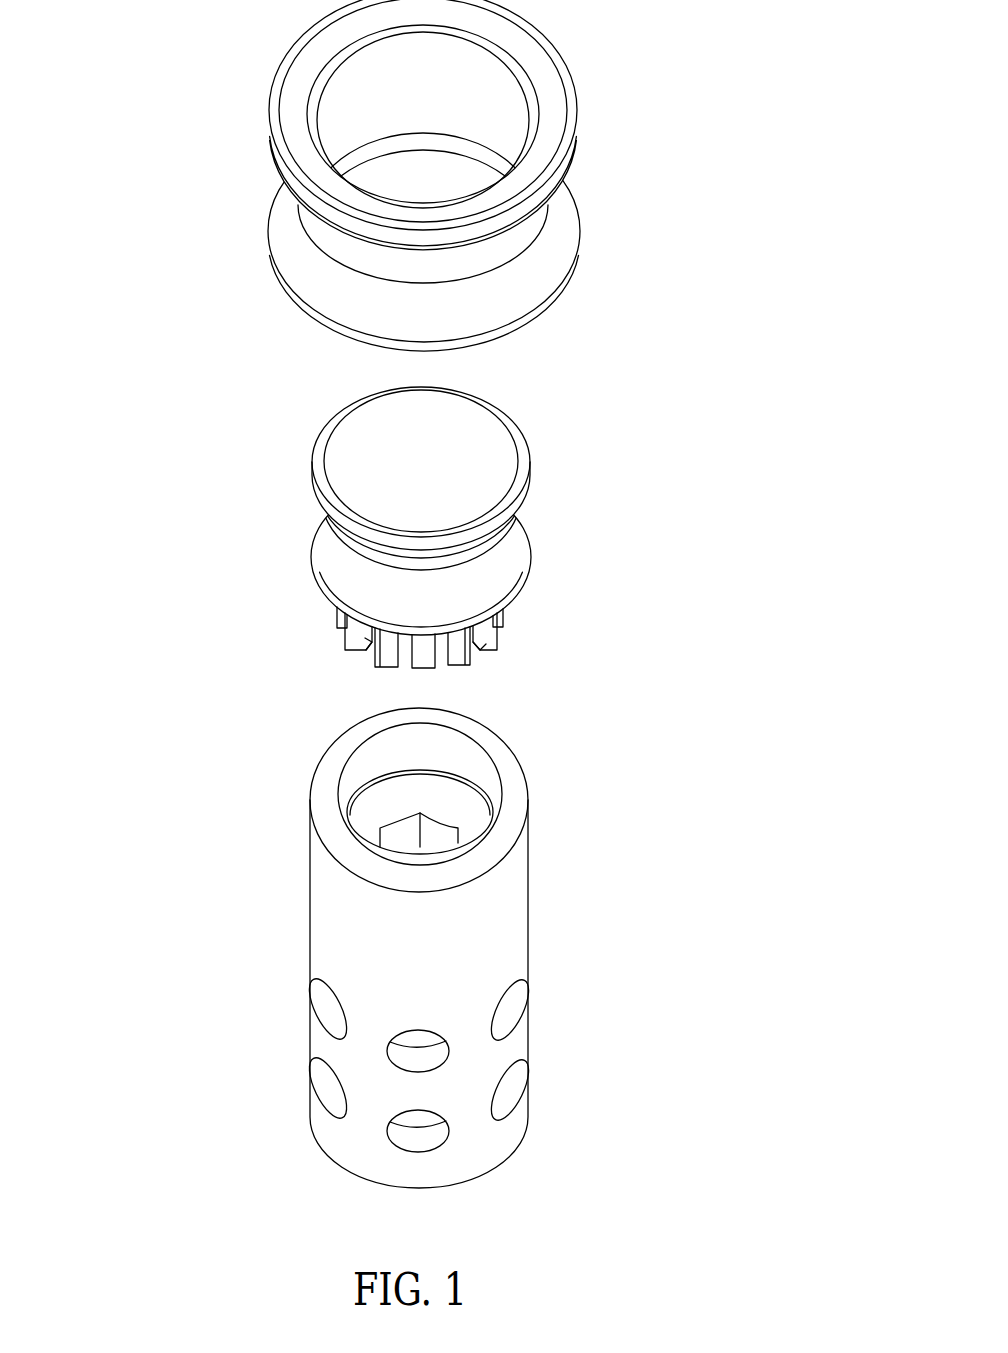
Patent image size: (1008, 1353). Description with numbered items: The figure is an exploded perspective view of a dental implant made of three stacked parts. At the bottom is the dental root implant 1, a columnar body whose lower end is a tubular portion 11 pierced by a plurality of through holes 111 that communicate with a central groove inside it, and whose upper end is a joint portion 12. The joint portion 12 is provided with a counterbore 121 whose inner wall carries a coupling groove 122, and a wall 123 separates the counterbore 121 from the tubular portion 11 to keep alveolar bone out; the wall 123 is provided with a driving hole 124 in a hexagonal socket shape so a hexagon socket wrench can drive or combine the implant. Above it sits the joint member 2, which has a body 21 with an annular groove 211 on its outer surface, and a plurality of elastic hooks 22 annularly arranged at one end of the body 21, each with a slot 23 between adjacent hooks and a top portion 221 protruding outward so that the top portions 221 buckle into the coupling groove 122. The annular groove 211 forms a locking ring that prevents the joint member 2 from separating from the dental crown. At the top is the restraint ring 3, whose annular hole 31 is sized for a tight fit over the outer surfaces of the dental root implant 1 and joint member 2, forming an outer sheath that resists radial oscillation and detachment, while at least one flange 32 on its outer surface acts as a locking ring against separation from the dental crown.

The dental root implant 1 is at (663, 763).
The tubular portion 11 is at (456, 1007).
The through holes 111 is at (510, 1100).
The joint portion 12 is at (414, 793).
The counterbore 121 is at (462, 755).
The coupling groove 122 is at (407, 833).
The wall 123 is at (465, 810).
The driving hole 124 is at (393, 828).
The joint member 2 is at (542, 437).
The body 21 is at (352, 435).
The annular groove 211 is at (510, 555).
The elastic hooks 22 is at (446, 652).
The top portion 221 is at (490, 635).
The slot 23 is at (372, 648).
The restraint ring 3 is at (580, 50).
The annular hole 31 is at (350, 78).
The flange 32 is at (276, 156).